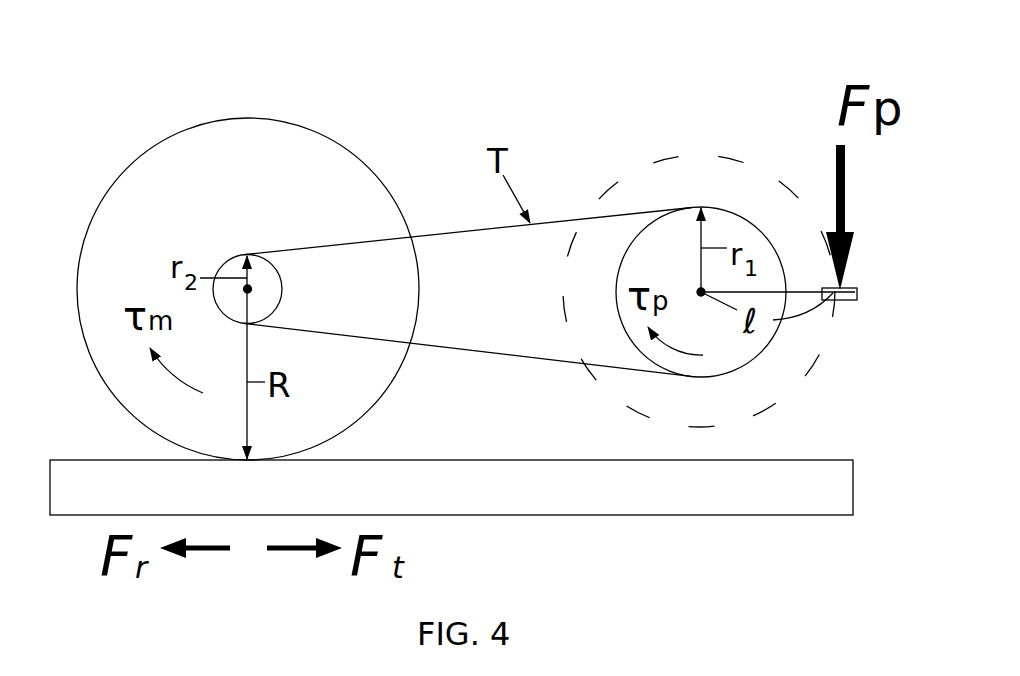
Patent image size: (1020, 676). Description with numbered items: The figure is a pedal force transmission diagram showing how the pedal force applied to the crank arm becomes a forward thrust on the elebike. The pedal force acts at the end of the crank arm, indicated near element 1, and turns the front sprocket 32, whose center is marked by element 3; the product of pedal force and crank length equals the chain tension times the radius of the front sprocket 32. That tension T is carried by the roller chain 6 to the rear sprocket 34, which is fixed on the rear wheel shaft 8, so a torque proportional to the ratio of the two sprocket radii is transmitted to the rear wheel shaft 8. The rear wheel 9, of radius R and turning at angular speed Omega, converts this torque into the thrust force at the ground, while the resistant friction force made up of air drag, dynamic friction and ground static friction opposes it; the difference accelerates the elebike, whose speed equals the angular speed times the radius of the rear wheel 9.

The load sensor 1 is at (858, 305).
The pulley axle 3 is at (706, 297).
The roller chain 6 is at (487, 354).
The rear wheel shaft 8 is at (265, 289).
The rear wheel 9 is at (341, 141).
The front sprocket 32 is at (728, 208).
The rear sprocket 34 is at (231, 257).